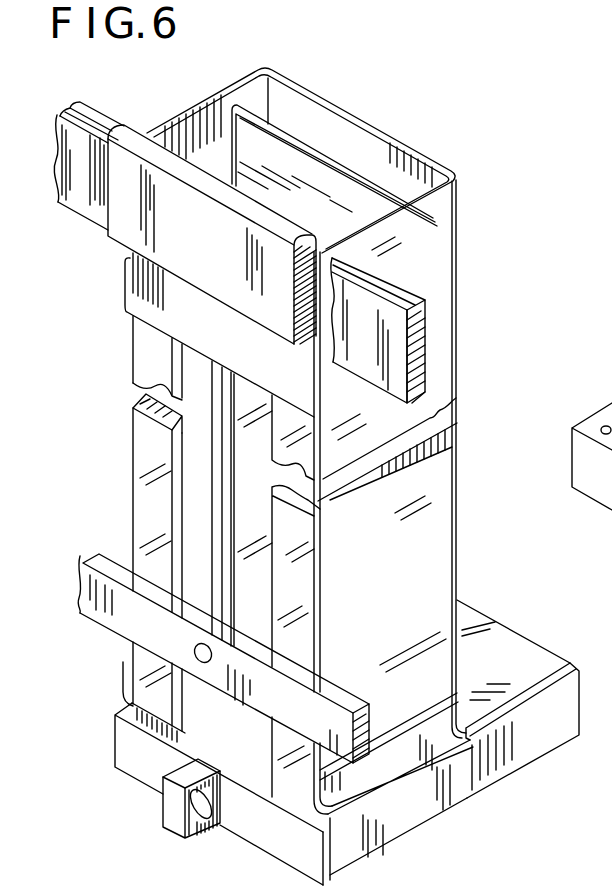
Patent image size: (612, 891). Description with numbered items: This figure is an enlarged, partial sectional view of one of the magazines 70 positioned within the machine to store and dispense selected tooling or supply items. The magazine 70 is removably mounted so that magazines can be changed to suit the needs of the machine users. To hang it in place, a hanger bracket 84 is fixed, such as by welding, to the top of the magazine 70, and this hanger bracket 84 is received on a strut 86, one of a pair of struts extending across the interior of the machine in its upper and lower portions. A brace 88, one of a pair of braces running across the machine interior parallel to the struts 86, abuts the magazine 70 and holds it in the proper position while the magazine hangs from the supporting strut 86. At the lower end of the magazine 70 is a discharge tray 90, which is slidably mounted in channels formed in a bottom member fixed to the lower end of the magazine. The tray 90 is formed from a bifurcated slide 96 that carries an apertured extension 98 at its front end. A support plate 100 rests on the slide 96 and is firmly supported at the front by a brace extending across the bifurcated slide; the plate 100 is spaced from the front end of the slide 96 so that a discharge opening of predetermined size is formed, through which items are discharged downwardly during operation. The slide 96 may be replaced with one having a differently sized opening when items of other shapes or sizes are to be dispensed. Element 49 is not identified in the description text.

The hanger bracket 84 is at (140, 228).
The strut 86 is at (383, 292).
The magazine 70 is at (427, 518).
The support plate 100 is at (477, 632).
The discharge tray 90 is at (363, 626).
The brace 88 is at (336, 688).
The bifurcated slide 96 is at (542, 737).
The base plate 49 is at (432, 820).
The apertured extension 98 is at (192, 838).